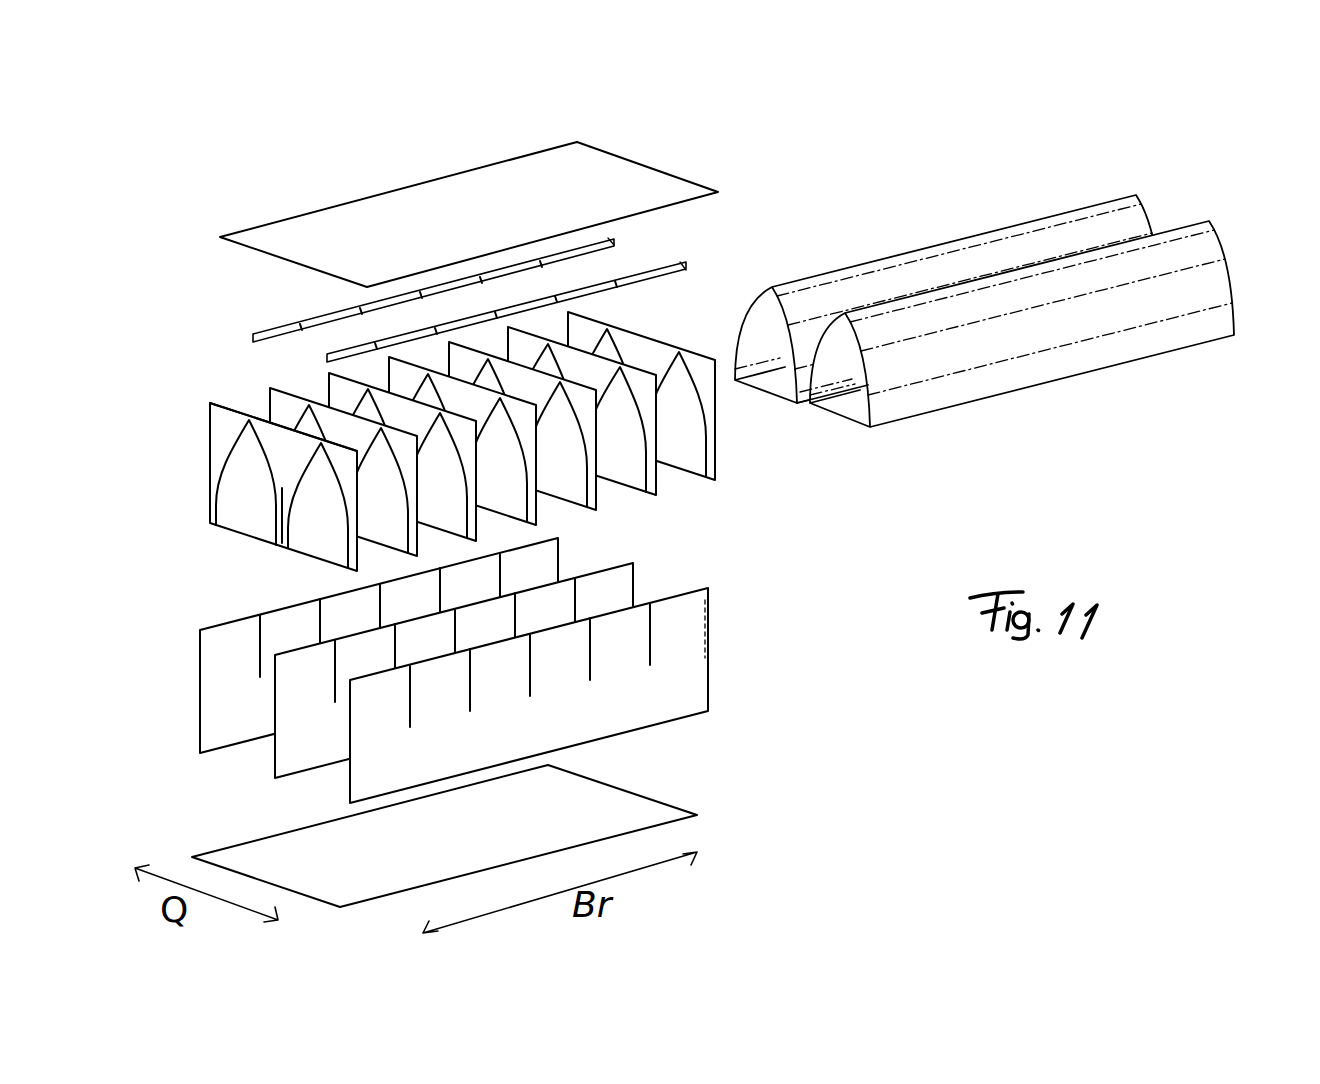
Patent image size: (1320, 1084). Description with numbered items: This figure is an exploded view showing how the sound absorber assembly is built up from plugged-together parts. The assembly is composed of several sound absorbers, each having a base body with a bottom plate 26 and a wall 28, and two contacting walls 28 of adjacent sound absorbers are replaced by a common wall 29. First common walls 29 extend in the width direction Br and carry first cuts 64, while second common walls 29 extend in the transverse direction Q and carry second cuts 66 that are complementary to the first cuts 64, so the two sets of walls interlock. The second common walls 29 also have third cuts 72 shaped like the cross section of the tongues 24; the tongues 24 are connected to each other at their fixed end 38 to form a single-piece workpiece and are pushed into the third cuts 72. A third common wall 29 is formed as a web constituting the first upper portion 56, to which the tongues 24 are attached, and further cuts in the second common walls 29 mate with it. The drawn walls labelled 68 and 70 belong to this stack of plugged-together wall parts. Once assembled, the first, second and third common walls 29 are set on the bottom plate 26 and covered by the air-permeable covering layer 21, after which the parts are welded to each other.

The covering layer 21 is at (598, 183).
The tongue 24 is at (888, 398).
The bottom plate 26 is at (627, 817).
The wall 28 is at (233, 517).
The common wall 29 is at (612, 244).
The fixed end 38 is at (1199, 208).
The first upper portion 56 is at (327, 360).
The first cuts 64 is at (647, 602).
The second cuts 66 is at (281, 542).
The lamella stack 68 is at (648, 485).
The upper edge 70 is at (250, 420).
The third cuts 72 is at (320, 321).